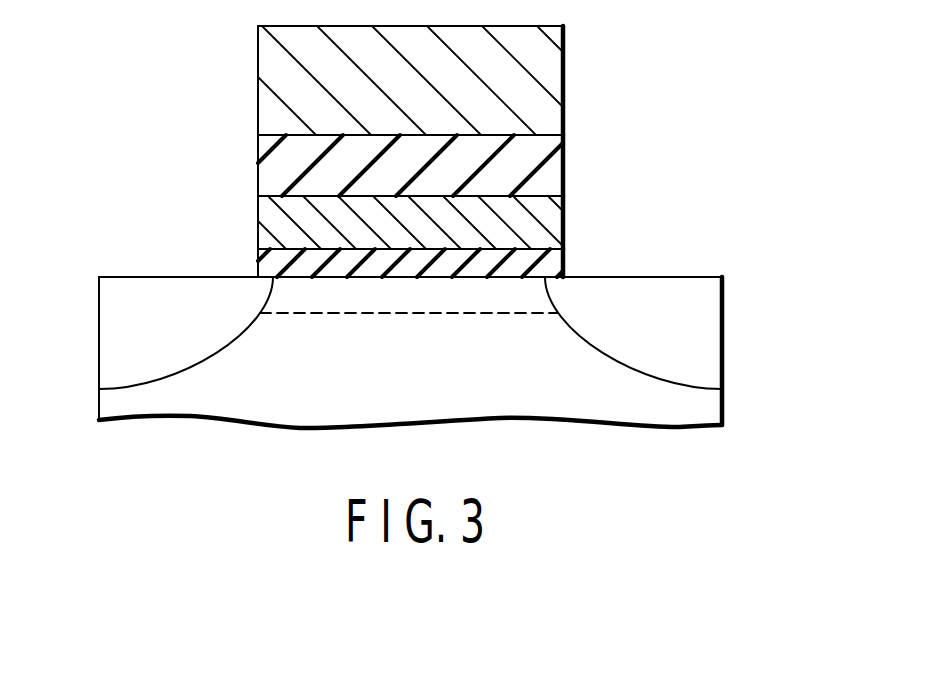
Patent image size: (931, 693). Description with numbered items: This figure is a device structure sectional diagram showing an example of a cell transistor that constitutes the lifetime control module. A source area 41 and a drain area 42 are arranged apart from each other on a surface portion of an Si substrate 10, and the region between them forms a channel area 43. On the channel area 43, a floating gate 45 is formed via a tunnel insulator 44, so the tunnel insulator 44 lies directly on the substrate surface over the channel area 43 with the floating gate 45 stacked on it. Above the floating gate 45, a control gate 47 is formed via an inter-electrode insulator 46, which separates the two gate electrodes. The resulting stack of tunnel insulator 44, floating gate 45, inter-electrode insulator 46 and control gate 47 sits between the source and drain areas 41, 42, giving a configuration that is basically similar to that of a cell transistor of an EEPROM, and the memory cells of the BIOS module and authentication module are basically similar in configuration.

The Si substrate 10 is at (709, 409).
The source area 41 is at (111, 333).
The drain area 42 is at (709, 349).
The channel area 43 is at (353, 314).
The tunnel insulator 44 is at (551, 262).
The floating gate 45 is at (551, 214).
The inter-electrode insulator 46 is at (551, 161).
The control gate 47 is at (551, 99).